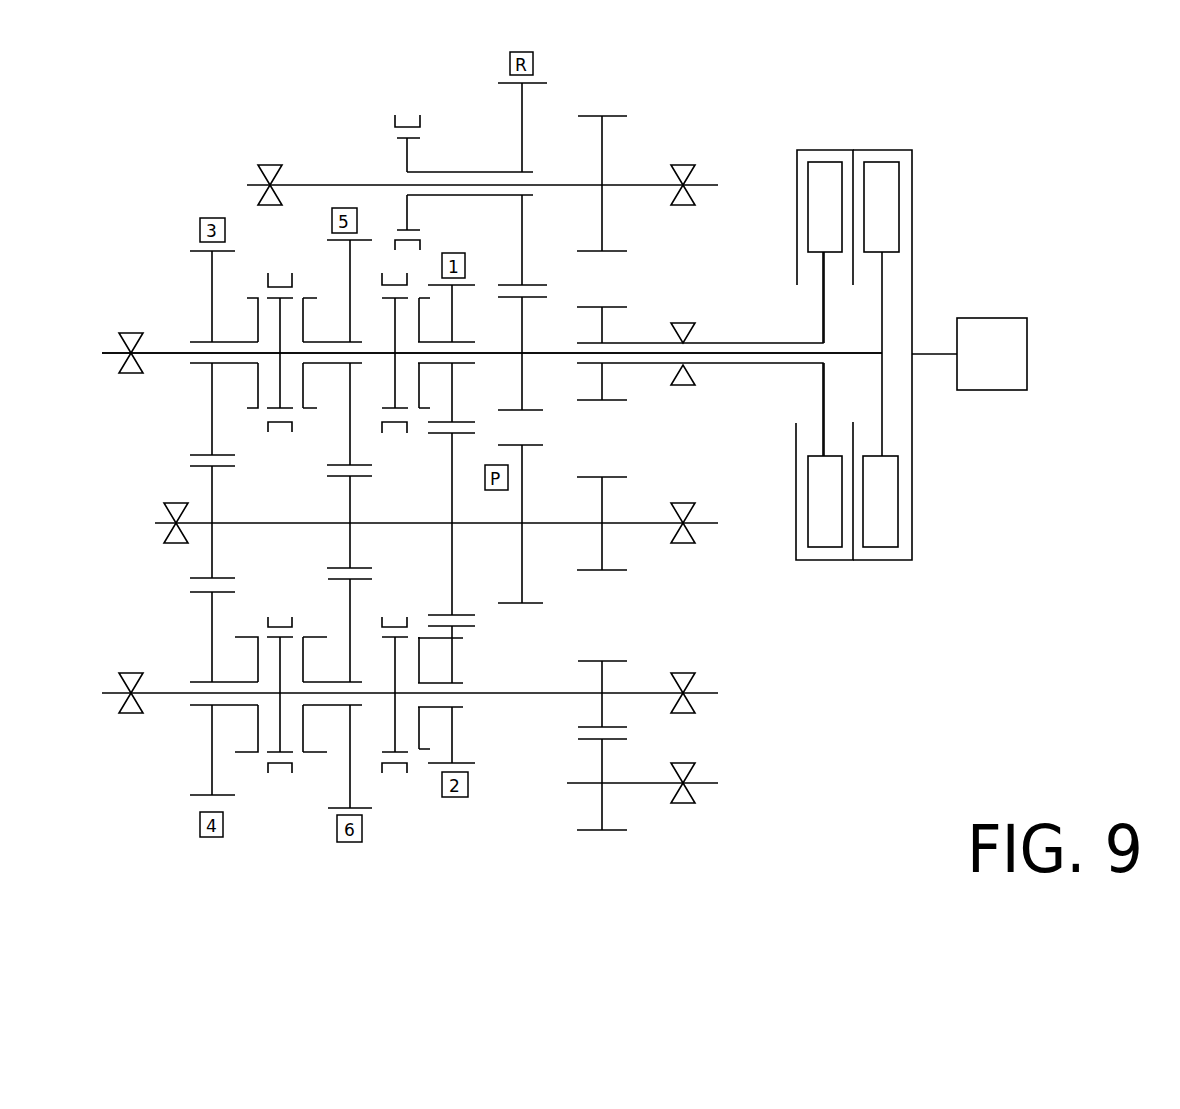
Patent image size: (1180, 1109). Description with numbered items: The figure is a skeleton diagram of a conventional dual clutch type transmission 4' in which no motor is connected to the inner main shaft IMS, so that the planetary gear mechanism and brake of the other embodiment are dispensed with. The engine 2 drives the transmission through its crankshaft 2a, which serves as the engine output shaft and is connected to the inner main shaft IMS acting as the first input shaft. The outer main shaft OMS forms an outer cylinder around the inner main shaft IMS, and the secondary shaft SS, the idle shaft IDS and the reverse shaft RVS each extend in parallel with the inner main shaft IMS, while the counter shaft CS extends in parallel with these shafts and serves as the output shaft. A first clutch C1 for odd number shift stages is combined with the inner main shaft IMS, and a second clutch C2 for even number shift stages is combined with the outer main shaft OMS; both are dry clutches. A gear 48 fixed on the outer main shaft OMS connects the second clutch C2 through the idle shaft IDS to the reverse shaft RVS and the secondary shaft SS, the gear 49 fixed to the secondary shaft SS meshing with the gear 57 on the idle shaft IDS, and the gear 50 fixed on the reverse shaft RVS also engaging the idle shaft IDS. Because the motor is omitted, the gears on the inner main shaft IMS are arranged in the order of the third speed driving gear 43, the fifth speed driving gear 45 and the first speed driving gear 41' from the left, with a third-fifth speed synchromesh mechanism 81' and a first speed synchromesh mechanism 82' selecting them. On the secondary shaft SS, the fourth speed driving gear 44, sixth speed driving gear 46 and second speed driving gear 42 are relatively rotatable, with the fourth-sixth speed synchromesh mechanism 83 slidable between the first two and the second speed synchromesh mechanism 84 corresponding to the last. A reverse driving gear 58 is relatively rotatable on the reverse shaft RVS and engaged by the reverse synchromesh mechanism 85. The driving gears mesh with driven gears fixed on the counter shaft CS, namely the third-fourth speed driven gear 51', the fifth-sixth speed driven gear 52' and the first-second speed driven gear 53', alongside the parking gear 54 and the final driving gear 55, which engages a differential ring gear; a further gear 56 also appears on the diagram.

The engine 2 is at (985, 317).
The crankshaft 2a is at (927, 353).
The dual clutch type transmission 4' is at (492, 426).
The first speed driving gear 41' is at (461, 328).
The second speed driving gear 42 is at (470, 763).
The third speed driving gear 43 is at (223, 252).
The fourth speed driving gear 44 is at (227, 797).
The fifth speed driving gear 45 is at (347, 242).
The sixth speed driving gear 46 is at (357, 808).
The gear 48 is at (612, 402).
The gear 49 is at (608, 660).
The gear 50 is at (607, 112).
The third-fourth speed driven gear 51' is at (226, 522).
The fifth-sixth speed driven gear 52' is at (371, 522).
The first-second speed driven gear 53' is at (441, 524).
The parking gear 54 is at (523, 447).
The final driving gear 55 is at (617, 478).
The inner main shaft gear 56 is at (527, 298).
The gear 57 is at (612, 742).
The reverse driving gear 58 is at (533, 83).
The third-fifth speed synchromesh mechanism 81' is at (282, 326).
The first speed synchromesh mechanism 82' is at (419, 330).
The fourth-sixth speed synchromesh mechanism 83 is at (273, 615).
The second speed synchromesh mechanism 84 is at (390, 615).
The reverse synchromesh mechanism 85 is at (405, 118).
The first clutch C1 is at (872, 150).
The second clutch C2 is at (822, 150).
The reverse shaft RVS is at (705, 183).
The outer main shaft OMS is at (710, 333).
The inner main shaft IMS is at (567, 357).
The counter shaft CS is at (705, 522).
The secondary shaft SS is at (705, 692).
The idle shaft IDS is at (705, 782).